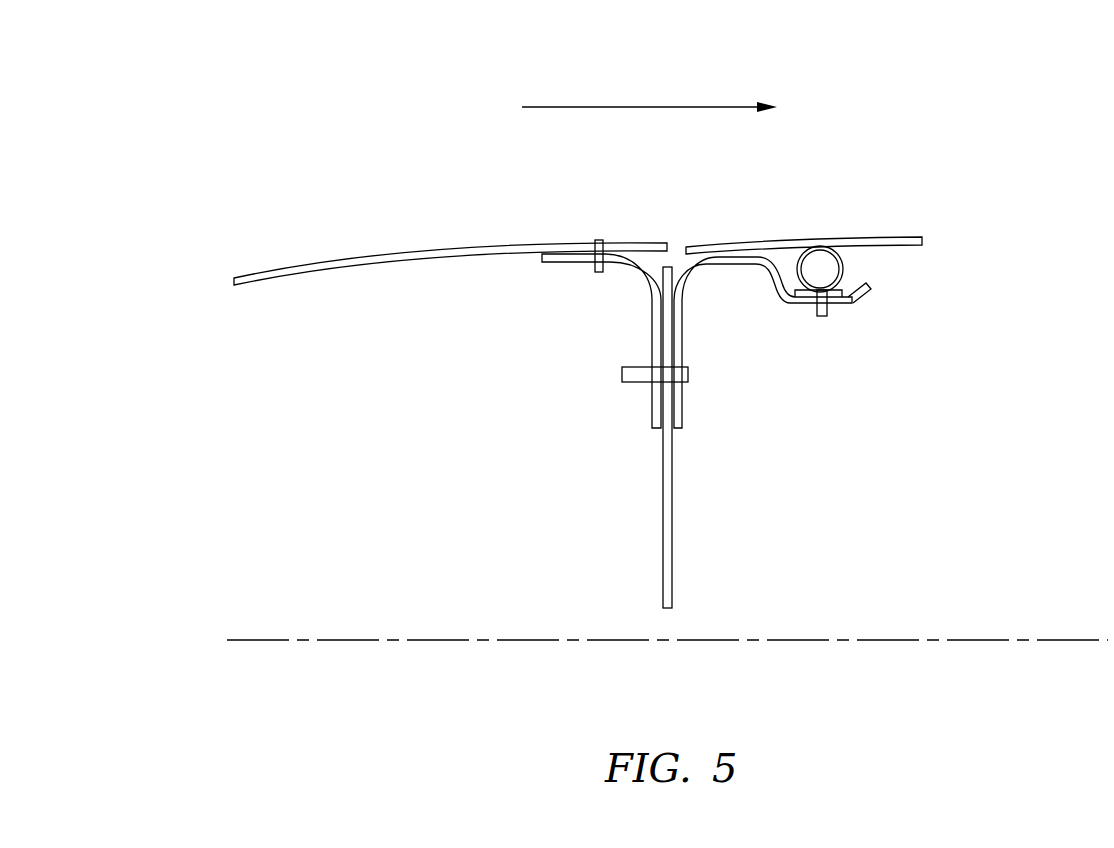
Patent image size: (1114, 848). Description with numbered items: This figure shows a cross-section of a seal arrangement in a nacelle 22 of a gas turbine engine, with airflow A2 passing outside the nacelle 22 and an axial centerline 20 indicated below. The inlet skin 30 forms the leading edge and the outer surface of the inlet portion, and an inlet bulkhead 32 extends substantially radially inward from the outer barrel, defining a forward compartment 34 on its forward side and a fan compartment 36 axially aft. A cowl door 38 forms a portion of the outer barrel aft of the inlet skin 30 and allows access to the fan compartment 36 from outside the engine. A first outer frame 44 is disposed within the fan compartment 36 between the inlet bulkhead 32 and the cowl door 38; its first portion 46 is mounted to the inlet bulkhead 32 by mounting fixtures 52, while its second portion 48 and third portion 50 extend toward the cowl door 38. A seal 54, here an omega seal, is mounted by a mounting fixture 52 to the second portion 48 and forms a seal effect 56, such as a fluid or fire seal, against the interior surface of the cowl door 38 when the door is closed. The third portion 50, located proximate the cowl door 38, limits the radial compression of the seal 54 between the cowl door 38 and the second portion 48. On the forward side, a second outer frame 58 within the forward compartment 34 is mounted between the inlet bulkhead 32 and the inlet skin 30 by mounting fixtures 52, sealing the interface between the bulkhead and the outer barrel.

The airflow A2 is at (627, 106).
The axial centerline 20 is at (1075, 646).
The nacelle 22 is at (1010, 151).
The inlet skin 30 is at (417, 250).
The inlet bulkhead 32 is at (673, 528).
The forward compartment 34 is at (465, 481).
The fan compartment 36 is at (905, 508).
The cowl door 38 is at (850, 238).
The first outer frame 44 is at (868, 286).
The first portion 46 is at (697, 376).
The second portion 48 is at (848, 322).
The third portion 50 is at (729, 276).
The mounting fixture 52 is at (599, 238).
The seal 54 is at (855, 269).
The seal effect 56 is at (872, 288).
The second outer frame 58 is at (640, 285).